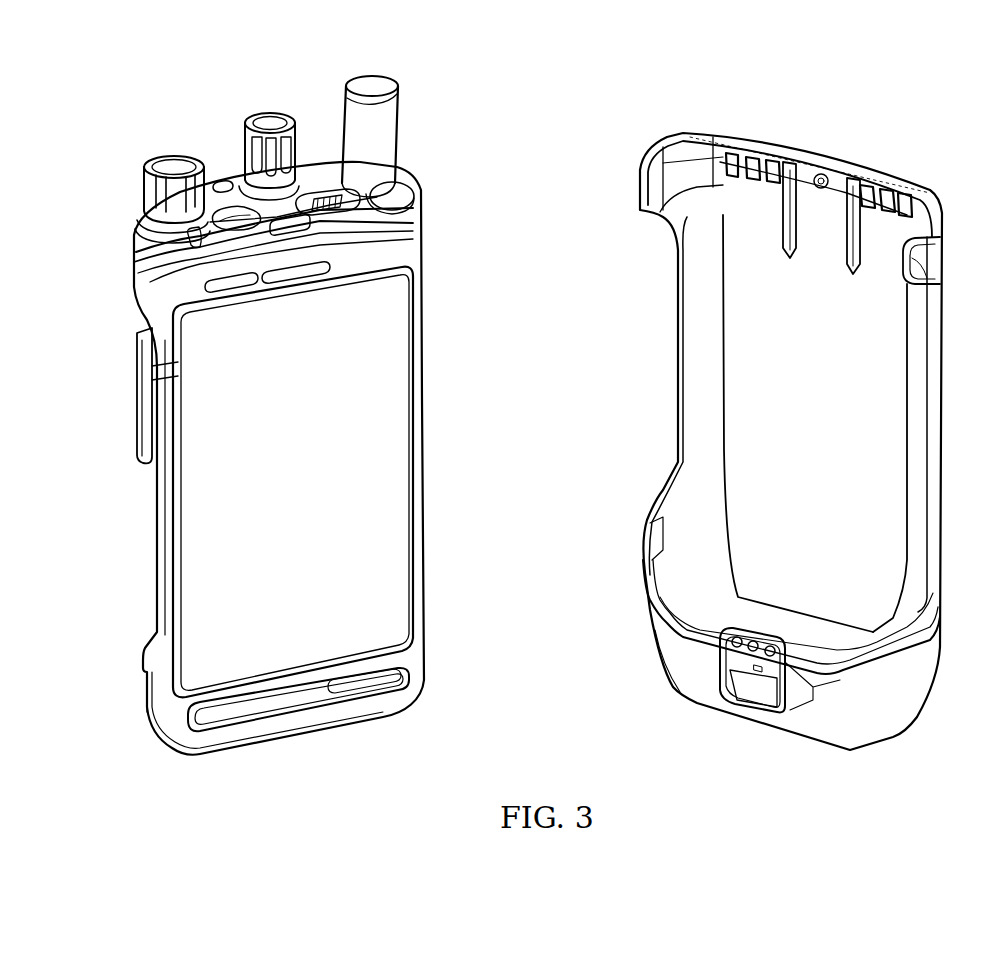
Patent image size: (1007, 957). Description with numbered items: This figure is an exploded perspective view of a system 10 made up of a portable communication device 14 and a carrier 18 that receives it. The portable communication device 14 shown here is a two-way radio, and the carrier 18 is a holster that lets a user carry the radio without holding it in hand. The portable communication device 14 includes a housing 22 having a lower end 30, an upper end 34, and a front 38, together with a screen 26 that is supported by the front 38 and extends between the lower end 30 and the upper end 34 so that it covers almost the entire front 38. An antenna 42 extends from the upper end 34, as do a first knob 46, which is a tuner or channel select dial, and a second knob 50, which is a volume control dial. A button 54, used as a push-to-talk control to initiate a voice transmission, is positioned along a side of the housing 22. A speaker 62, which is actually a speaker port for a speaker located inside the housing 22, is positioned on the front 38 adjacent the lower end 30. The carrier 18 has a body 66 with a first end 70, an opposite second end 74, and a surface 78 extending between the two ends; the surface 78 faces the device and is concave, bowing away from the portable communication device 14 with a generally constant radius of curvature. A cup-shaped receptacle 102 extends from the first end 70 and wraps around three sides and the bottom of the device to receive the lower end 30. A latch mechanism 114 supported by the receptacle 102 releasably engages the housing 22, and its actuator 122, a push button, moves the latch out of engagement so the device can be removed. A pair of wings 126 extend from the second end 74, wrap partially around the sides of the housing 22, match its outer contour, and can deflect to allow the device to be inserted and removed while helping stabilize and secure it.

The system 10 is at (960, 58).
The portable communication device 14 is at (137, 145).
The carrier 18 is at (952, 170).
The housing 22 is at (150, 274).
The screen 26 is at (396, 461).
The lower end 30 is at (172, 750).
The upper end 34 is at (227, 185).
The front 38 is at (402, 249).
The antenna 42 is at (382, 126).
The first knob 46 is at (270, 112).
The second knob 50 is at (147, 187).
The button 54 is at (141, 397).
The speaker 62 is at (222, 732).
The body 66 is at (934, 442).
The first end 70 is at (930, 686).
The second end 74 is at (877, 176).
The surface 78 is at (890, 482).
The receptacle 102 is at (894, 700).
The latch mechanism 114 is at (726, 702).
The actuator 122 is at (720, 656).
The wings 126 is at (682, 148).